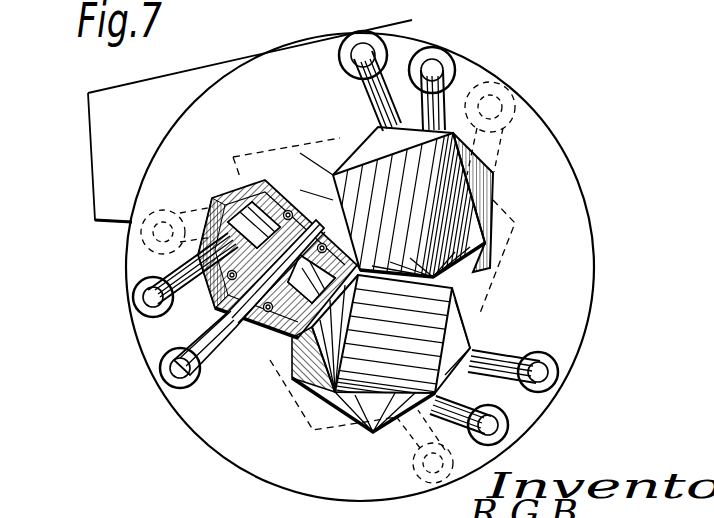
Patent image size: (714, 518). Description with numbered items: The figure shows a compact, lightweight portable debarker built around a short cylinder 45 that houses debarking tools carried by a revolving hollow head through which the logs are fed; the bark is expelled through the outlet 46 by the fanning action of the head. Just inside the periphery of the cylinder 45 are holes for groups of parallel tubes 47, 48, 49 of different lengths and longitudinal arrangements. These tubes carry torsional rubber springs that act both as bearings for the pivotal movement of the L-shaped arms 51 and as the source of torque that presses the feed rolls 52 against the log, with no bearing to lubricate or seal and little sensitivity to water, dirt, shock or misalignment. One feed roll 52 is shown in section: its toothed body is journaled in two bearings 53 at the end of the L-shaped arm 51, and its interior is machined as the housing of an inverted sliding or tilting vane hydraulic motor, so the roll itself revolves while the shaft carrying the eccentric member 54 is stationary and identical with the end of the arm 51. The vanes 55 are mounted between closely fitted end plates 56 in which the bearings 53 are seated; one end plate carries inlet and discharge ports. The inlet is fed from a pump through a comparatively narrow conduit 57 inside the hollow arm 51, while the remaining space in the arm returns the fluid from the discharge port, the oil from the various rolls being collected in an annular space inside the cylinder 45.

The short cylinder 45 is at (527, 133).
The outlet 46 is at (152, 97).
The tube 47 is at (375, 45).
The tube 48 is at (445, 77).
The tube 49 is at (512, 82).
The L-shaped arm 51 is at (360, 82).
The feed roll 52 is at (493, 173).
The bearing 53 is at (285, 182).
The eccentric member 54 is at (252, 185).
The vane 55 is at (215, 205).
The end plate 56 is at (305, 332).
The conduit 57 is at (265, 310).